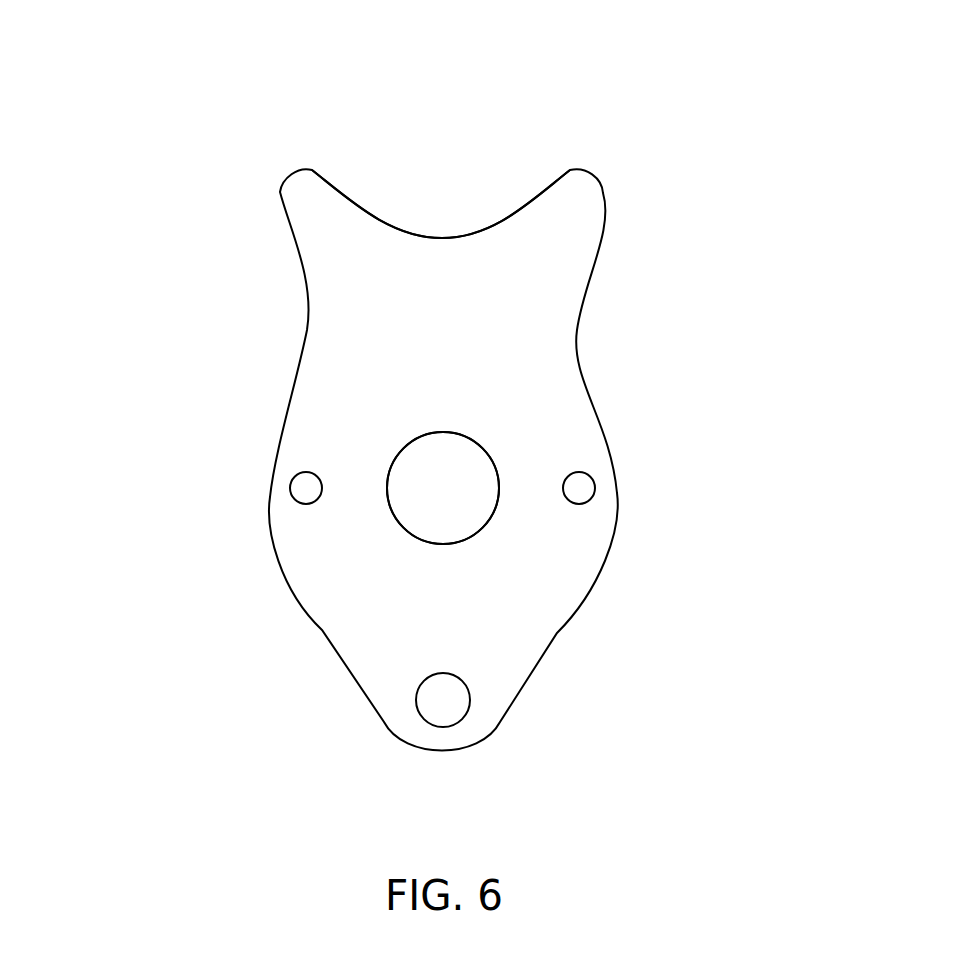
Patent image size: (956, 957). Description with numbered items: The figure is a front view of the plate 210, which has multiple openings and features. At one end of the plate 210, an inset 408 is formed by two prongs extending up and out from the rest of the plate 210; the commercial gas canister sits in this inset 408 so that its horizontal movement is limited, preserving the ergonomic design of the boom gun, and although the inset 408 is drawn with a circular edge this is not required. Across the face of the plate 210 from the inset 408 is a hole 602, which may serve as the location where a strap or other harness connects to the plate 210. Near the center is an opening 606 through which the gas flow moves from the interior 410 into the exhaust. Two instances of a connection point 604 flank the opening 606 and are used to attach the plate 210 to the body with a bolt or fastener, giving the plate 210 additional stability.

The plate 210 is at (250, 580).
The inset 408 is at (393, 155).
The opening 606 is at (452, 431).
The interior 410 is at (462, 516).
The connection point 604 is at (290, 488).
The hole 602 is at (417, 697).